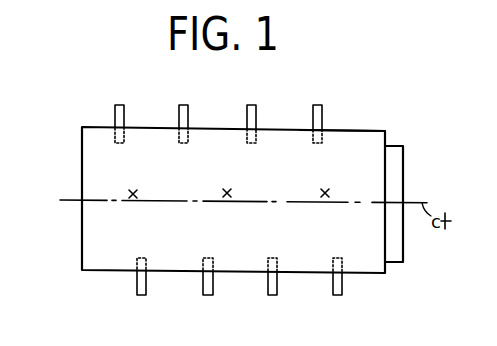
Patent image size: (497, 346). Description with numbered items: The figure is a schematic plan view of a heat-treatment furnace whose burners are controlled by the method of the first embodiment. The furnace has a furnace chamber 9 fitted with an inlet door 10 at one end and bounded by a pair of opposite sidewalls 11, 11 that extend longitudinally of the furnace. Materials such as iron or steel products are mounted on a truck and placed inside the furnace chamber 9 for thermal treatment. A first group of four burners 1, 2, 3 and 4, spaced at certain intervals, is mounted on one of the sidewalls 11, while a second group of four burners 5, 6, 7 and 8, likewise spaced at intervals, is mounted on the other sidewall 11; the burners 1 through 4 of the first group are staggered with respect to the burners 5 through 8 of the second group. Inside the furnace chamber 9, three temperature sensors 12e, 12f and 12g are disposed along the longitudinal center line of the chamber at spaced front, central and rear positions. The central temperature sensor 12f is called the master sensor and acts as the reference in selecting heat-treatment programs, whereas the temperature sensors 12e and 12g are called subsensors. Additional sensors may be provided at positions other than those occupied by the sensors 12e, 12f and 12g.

The burner 1 is at (322, 106).
The burner 2 is at (256, 106).
The burner 3 is at (188, 105).
The burner 4 is at (124, 105).
The burner 5 is at (342, 292).
The burner 6 is at (277, 292).
The burner 7 is at (213, 292).
The burner 8 is at (146, 292).
The furnace chamber 9 is at (86, 150).
The inlet door 10 is at (400, 162).
The sidewall 11 is at (365, 130).
The temperature sensor 12e is at (328, 190).
The temperature sensor 12f is at (230, 190).
The temperature sensor 12g is at (136, 191).